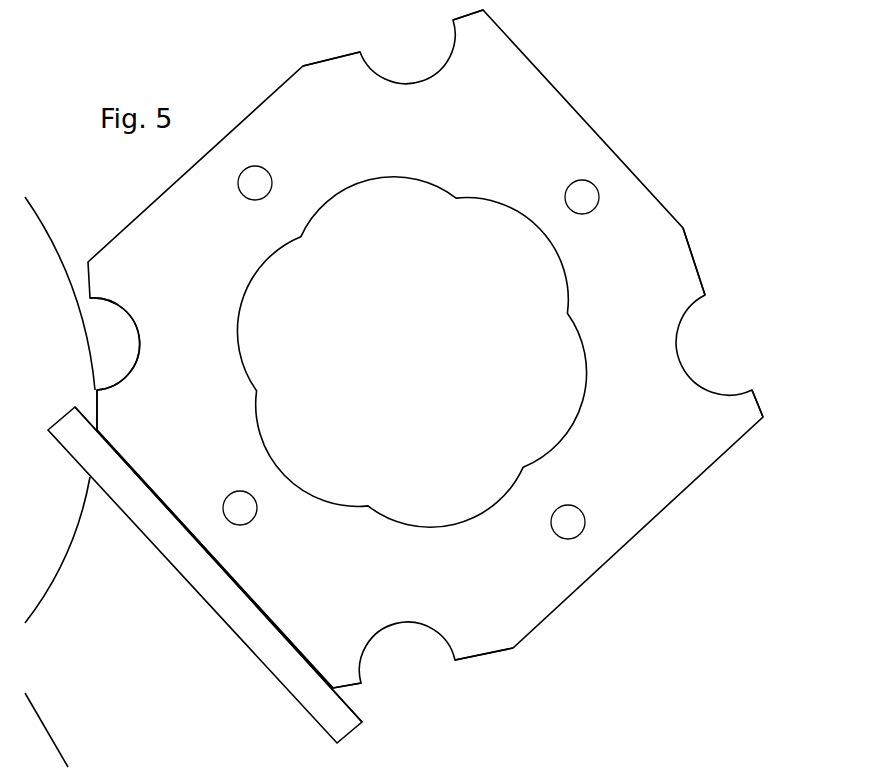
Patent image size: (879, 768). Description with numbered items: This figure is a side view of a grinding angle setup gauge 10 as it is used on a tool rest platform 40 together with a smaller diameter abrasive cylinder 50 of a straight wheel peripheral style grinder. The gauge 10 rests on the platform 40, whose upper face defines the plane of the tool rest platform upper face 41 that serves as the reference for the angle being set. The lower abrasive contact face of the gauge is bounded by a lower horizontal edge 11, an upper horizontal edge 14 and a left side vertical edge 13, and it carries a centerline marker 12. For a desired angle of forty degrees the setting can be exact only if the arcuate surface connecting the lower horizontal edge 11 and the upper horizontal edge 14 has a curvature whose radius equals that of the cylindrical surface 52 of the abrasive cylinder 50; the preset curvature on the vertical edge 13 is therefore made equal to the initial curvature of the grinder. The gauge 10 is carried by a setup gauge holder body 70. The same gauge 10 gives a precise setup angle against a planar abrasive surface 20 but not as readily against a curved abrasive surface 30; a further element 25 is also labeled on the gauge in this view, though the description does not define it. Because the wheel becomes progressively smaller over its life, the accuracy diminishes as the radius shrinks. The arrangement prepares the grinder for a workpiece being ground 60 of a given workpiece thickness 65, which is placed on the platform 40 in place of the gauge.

The angle setup gauge 10 is at (620, 495).
The lower horizontal edge of setup gauge lower abrasive contact face 11 is at (97, 430).
The centerline marker of lower abrasive contact face 12 is at (128, 410).
The left side vertical edge of setup gauge lower abrasive contact face 13 is at (95, 402).
The upper horizontal edge of setup gauge lower abrasive contact face 14 is at (95, 383).
The planar abrasive surface 20 is at (693, 263).
The tab of plate 25 is at (333, 62).
The curved abrasive surface 30 is at (482, 655).
The tool rest platform 40 is at (97, 410).
The plane of the tool rest platform upper face 41 is at (213, 558).
The smaller diameter abrasive cylinder 50 is at (40, 500).
The cylindrical surface of a smaller diameter abrasive cylinder 52 is at (40, 248).
The workpiece being ground 60 is at (347, 680).
The workpiece thickness 65 is at (468, 17).
The setup gauge holder body 70 is at (758, 403).